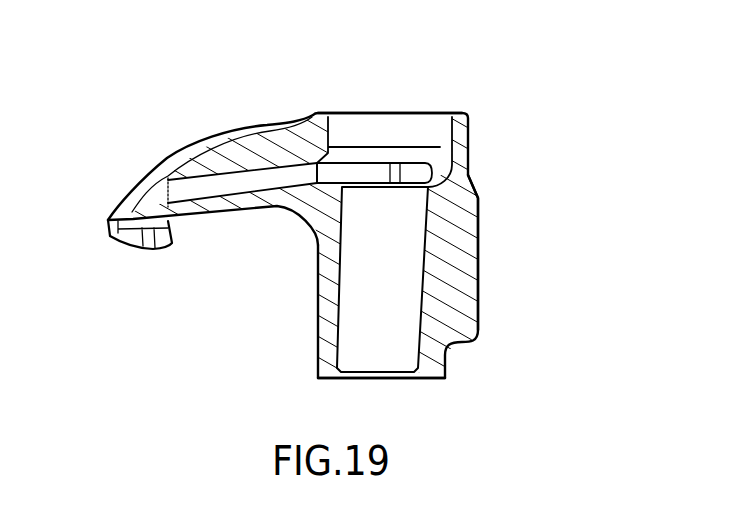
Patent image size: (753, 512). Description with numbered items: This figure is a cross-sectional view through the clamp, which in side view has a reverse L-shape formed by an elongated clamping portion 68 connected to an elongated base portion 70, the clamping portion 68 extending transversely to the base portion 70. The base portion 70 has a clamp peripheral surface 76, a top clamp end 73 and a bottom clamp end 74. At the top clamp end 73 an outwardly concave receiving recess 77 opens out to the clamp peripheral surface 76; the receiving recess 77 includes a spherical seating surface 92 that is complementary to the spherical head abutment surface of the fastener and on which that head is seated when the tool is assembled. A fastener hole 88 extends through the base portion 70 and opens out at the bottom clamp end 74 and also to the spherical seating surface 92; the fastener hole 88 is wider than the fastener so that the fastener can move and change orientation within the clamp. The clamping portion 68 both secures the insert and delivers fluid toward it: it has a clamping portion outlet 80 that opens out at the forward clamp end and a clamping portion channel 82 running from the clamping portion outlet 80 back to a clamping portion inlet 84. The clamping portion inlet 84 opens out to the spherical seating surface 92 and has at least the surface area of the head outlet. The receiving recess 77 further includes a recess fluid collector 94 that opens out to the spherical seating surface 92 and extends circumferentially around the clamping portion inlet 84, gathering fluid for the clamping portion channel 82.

The clamping portion 68 is at (184, 118).
The base portion 70 is at (493, 257).
The top clamp end 73 is at (321, 105).
The bottom clamp end 74 is at (307, 355).
The clamp peripheral surface 76 is at (478, 200).
The receiving recess 77 is at (430, 128).
The clamping portion outlet 80 is at (178, 193).
The clamping portion channel 82 is at (243, 180).
The clamping portion inlet 84 is at (345, 170).
The fastener hole 88 is at (400, 298).
The spherical seating surface 92 is at (427, 176).
The recess fluid collector 94 is at (363, 168).